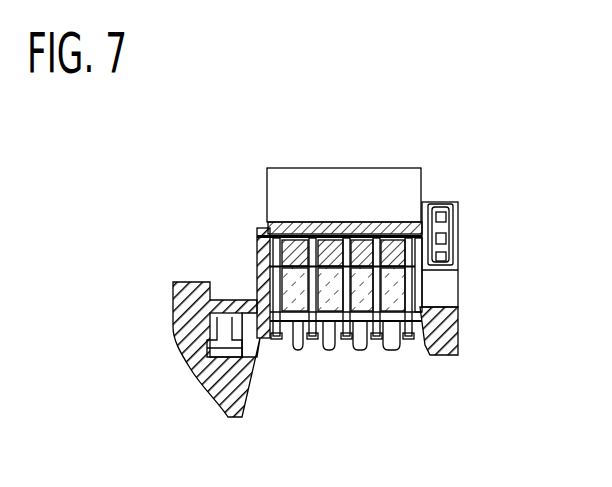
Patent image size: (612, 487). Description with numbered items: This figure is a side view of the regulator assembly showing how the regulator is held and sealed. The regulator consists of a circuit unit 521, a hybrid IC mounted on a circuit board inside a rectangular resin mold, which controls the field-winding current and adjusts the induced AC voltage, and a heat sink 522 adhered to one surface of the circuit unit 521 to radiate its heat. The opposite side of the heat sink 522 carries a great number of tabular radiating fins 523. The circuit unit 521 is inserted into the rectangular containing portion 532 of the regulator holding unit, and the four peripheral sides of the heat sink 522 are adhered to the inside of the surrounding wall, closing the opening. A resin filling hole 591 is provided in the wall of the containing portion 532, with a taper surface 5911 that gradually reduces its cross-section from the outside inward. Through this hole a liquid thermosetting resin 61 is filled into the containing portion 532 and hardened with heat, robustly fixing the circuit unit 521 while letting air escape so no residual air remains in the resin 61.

The tabular radiating fins 523 is at (308, 188).
The heat sink 522 is at (267, 223).
The circuit unit 521 is at (258, 253).
The thermosetting resin 61 is at (367, 343).
The containing portion 532 is at (292, 337).
The resin filling hole 591 is at (443, 291).
The taper surface 5911 is at (460, 307).